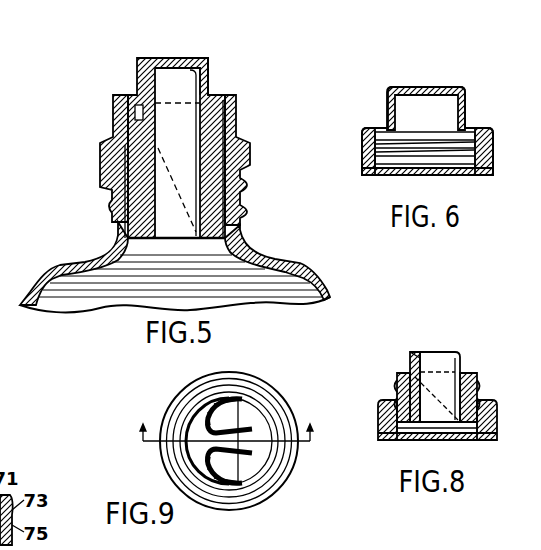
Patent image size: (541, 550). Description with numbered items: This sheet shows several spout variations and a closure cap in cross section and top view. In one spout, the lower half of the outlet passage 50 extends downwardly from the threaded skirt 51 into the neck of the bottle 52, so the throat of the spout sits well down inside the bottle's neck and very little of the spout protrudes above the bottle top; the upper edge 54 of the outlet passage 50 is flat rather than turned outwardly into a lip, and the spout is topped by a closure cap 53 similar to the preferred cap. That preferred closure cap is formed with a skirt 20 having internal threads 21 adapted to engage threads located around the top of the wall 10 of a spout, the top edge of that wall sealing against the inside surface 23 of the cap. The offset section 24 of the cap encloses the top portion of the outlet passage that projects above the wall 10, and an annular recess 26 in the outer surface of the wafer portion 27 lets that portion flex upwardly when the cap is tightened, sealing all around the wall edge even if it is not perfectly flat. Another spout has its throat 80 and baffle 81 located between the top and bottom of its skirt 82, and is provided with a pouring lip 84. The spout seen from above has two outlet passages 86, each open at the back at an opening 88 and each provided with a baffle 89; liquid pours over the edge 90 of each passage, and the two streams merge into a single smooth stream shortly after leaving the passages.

In FIG. 5, the outlet passage 50 is at (183, 125).
In FIG. 5, the threaded skirt 51 is at (244, 150).
In FIG. 5, the bottle 52 is at (300, 292).
In FIG. 5, the closure cap 53 is at (208, 73).
In FIG. 5, the upper edge 54 is at (155, 58).
In FIG. 6, the skirt 20 is at (486, 135).
In FIG. 6, the internal threads 21 is at (385, 165).
In FIG. 6, the inside surface 23 is at (460, 165).
In FIG. 6, the offset section 24 is at (418, 108).
In FIG. 6, the annular recess 26 is at (470, 130).
In FIG. 6, the wafer portion 27 is at (388, 128).
In FIG. 8, the throat 80 is at (440, 358).
In FIG. 8, the baffle 81 is at (455, 425).
In FIG. 8, the skirt 82 is at (488, 405).
In FIG. 8, the pouring lip 84 is at (410, 355).
In FIG. 9, the outlet passages 86 is at (236, 403).
In FIG. 9, the opening 88 is at (250, 418).
In FIG. 9, the baffle 89 is at (216, 406).
In FIG. 9, the edge 90 is at (207, 420).
In FIG. 9, the wall 10 is at (216, 420).